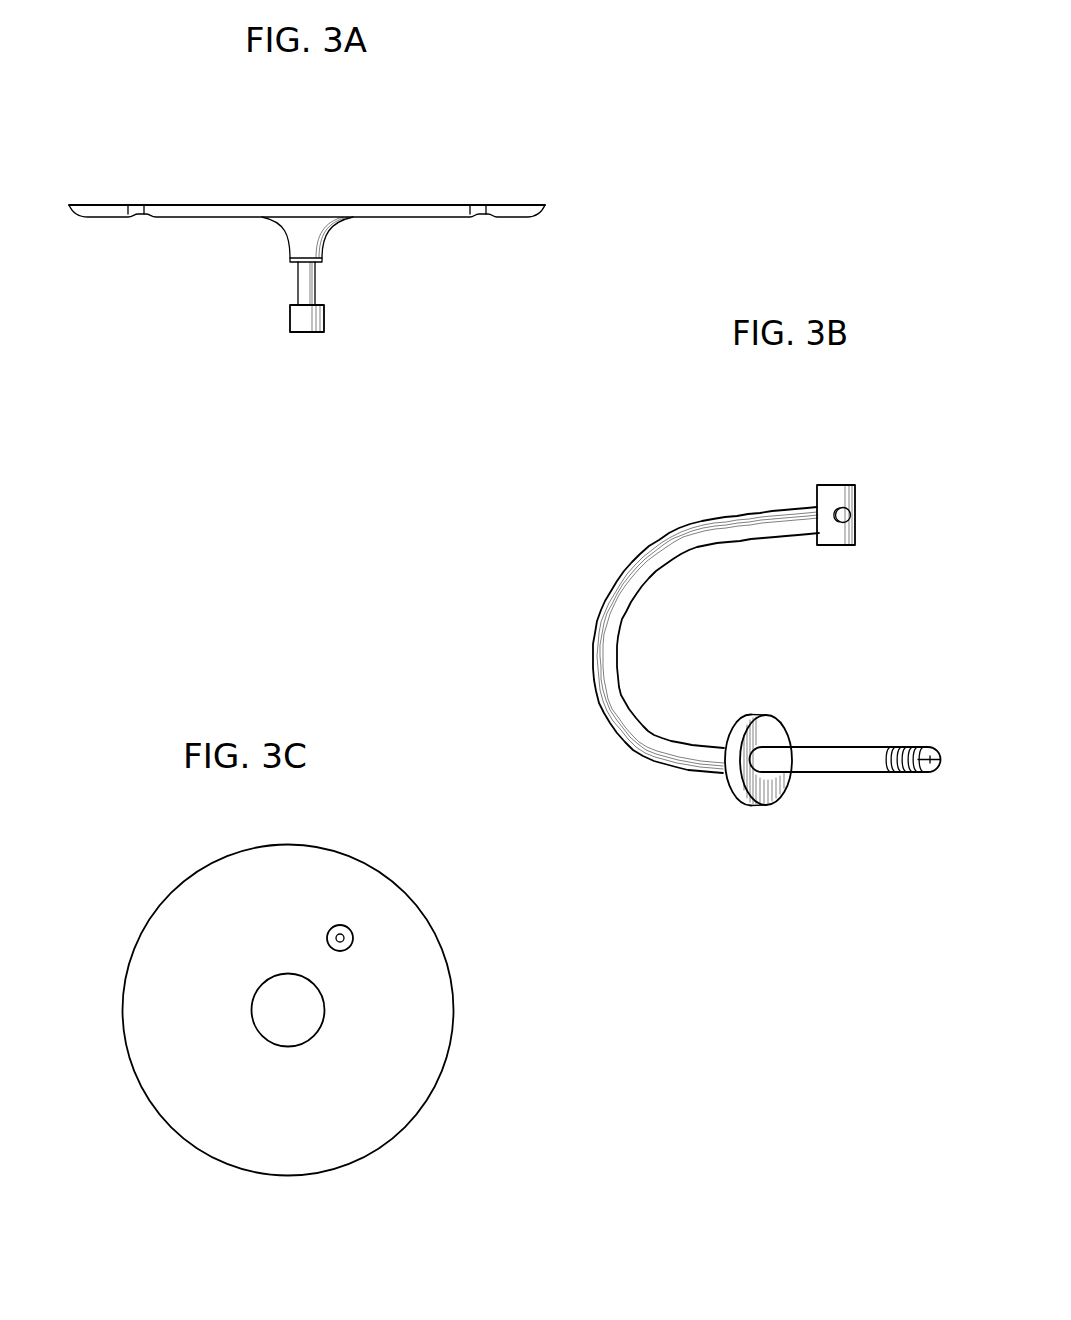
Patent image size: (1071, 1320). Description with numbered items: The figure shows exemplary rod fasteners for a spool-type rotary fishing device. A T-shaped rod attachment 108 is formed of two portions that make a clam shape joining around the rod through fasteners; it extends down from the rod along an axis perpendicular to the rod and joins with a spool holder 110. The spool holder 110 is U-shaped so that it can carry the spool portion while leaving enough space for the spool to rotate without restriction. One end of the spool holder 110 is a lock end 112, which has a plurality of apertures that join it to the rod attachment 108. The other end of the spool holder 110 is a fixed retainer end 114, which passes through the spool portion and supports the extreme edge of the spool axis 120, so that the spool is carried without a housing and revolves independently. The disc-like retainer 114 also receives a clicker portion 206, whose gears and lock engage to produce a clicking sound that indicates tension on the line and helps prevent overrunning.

In FIG. 3A, the T-shaped rod attachment 108 is at (302, 205).
In FIG. 3B, the spool holder 110 is at (625, 570).
In FIG. 3B, the lock end 112 is at (830, 485).
In FIG. 3B, the fixed retainer end 114 is at (740, 802).
In FIG. 3C, the fixed retainer end 114 is at (185, 927).
In FIG. 3C, the spool axis 120 is at (294, 1030).
In FIG. 3C, the clicker portion 206 is at (353, 938).